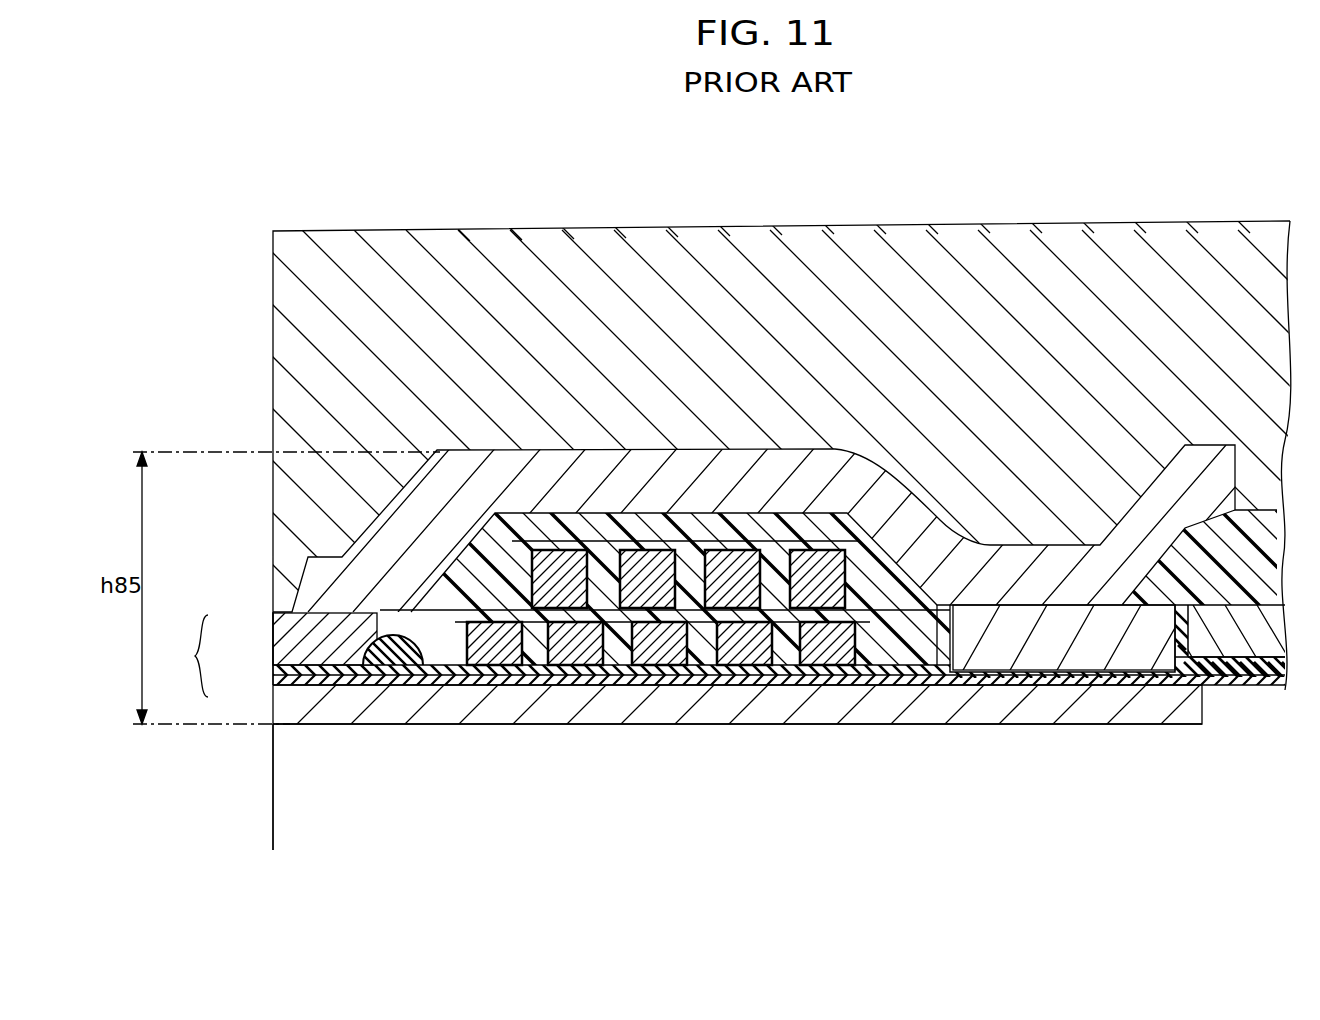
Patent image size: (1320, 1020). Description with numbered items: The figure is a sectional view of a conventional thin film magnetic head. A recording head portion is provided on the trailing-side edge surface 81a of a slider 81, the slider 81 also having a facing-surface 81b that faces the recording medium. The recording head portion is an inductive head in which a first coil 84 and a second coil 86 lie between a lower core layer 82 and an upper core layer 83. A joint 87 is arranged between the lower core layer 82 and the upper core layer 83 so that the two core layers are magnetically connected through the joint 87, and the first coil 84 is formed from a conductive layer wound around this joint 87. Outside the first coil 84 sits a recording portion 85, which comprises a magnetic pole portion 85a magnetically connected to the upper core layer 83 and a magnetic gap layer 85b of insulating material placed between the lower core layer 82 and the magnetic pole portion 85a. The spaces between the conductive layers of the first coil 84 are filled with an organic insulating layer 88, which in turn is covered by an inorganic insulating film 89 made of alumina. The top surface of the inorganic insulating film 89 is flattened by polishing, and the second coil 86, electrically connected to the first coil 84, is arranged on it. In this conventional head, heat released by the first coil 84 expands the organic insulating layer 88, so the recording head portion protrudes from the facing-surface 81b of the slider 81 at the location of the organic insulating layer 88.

The slider 81 is at (270, 828).
The trailing-side edge surface 81a is at (498, 724).
The facing-surface 81b is at (273, 768).
The lower core layer 82 is at (1124, 700).
The upper core layer 83 is at (893, 495).
The first coil 84 is at (643, 685).
The recording portion 85 is at (219, 655).
The magnetic pole portion 85a is at (275, 628).
The magnetic gap layer 85b is at (275, 672).
The second coil 86 is at (678, 513).
The joint 87 is at (1050, 645).
The organic insulating layer 88 is at (890, 647).
The inorganic insulating film 89 is at (398, 632).